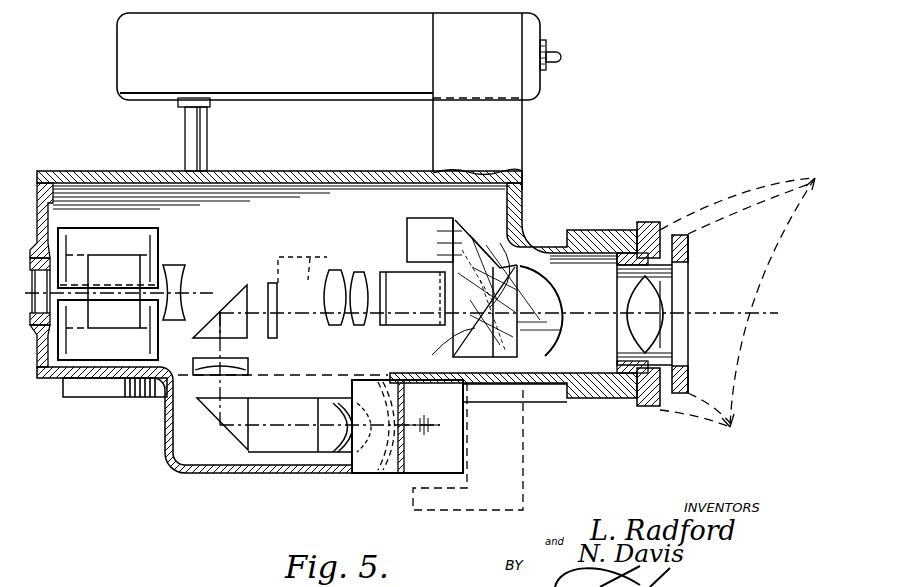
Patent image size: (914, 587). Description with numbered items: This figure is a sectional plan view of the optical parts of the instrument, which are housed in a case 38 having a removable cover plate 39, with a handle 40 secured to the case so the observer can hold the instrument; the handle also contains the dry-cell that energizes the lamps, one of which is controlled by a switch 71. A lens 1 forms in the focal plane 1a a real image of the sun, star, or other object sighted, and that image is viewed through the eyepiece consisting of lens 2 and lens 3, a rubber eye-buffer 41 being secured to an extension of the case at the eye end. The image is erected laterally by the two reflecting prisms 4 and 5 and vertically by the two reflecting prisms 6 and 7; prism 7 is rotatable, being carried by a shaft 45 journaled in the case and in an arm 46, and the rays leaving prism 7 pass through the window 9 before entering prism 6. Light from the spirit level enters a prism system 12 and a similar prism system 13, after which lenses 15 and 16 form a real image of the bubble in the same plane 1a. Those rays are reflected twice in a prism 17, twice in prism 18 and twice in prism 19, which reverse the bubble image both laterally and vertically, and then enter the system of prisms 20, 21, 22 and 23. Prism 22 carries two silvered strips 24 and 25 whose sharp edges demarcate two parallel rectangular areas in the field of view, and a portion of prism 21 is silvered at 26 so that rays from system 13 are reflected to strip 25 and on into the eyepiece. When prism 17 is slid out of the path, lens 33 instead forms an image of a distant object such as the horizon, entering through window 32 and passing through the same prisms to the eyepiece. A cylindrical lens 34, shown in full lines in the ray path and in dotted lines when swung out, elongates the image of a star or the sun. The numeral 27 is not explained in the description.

The lens 1 is at (212, 373).
The focal plane 1a is at (500, 372).
The lens 2 is at (560, 330).
The lens 3 is at (652, 314).
The reflecting prism 4 is at (232, 330).
The reflecting prism 5 is at (240, 435).
The reflecting prism 6 is at (300, 447).
The reflecting prism 7 is at (388, 470).
The window 9 is at (345, 452).
The prism system 12 is at (108, 307).
The prism system 13 is at (108, 258).
The lens 15 is at (184, 268).
The lens 16 is at (333, 325).
The prism 17 is at (395, 285).
The prism 18 is at (460, 235).
The prism 19 is at (413, 224).
The prism 20 is at (522, 258).
The prism 21 is at (572, 265).
The prism 22 is at (545, 340).
The prism 23 is at (439, 346).
The silvered strip 24 is at (515, 270).
The silvered strip 25 is at (517, 296).
The silvered surface 26 is at (486, 250).
The prism face 27 is at (471, 235).
The window 32 is at (34, 300).
The lens 33 is at (358, 325).
The cylindrical lens 34 is at (280, 296).
The case 38 is at (113, 378).
The cover plate 39 is at (128, 178).
The handle 40 is at (318, 75).
The rubber eye-buffer 41 is at (757, 276).
The shaft 45 is at (446, 12).
The arm 46 is at (520, 455).
The switch 71 is at (560, 58).